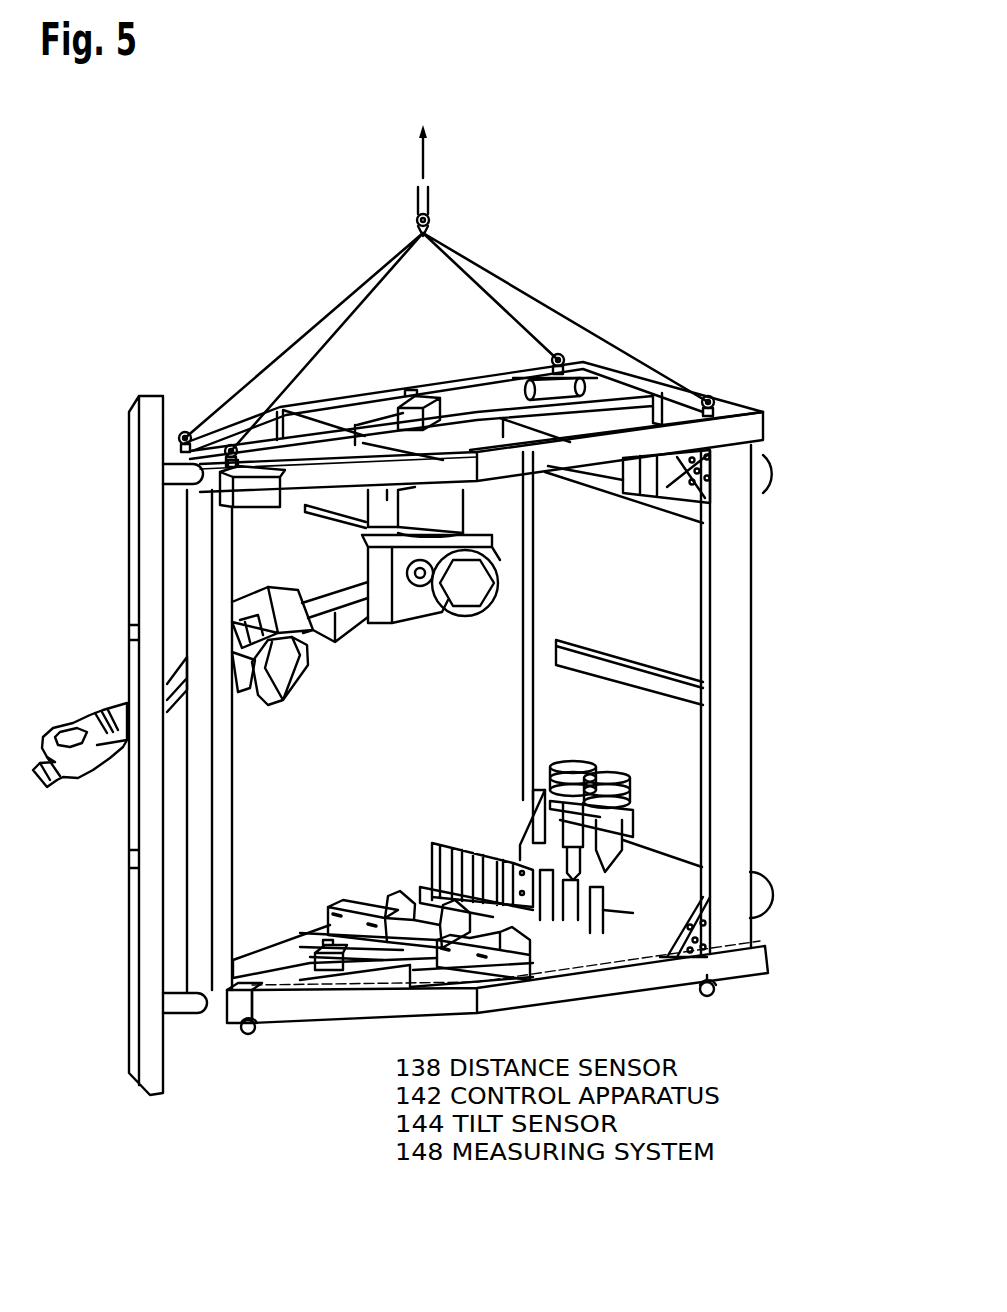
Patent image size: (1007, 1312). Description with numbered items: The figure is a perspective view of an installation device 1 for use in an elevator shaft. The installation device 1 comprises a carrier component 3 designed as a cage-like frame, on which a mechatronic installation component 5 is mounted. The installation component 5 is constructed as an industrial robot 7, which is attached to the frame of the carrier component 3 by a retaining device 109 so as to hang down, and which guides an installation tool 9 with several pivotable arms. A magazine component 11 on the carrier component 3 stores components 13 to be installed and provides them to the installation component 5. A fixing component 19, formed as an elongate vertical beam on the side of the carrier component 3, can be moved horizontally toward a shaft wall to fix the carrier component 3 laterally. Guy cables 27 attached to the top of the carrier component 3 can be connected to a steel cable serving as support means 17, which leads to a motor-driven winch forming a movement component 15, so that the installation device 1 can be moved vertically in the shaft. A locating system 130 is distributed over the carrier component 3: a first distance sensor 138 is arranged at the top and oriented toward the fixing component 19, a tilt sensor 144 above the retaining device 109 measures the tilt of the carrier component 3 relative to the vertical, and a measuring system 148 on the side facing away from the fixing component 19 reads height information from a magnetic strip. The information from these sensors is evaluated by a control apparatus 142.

The installation device 1 is at (168, 337).
The carrier component 3 is at (738, 436).
The mechatronic installation component 5 is at (284, 574).
The industrial robot 7 is at (242, 611).
The installation tool 9 is at (545, 775).
The magazine component 11 is at (398, 855).
The components to be installed 13 is at (353, 905).
The movement component 15 is at (423, 132).
The support means 17 is at (430, 207).
The fixing component 19 is at (132, 945).
The guy cables 27 is at (614, 347).
The retaining device 109 is at (423, 505).
The locating system 130 is at (183, 400).
The distance sensor 138 is at (222, 490).
The control apparatus 142 is at (320, 935).
The tilt sensor 144 is at (420, 406).
The measuring system 148 is at (670, 484).